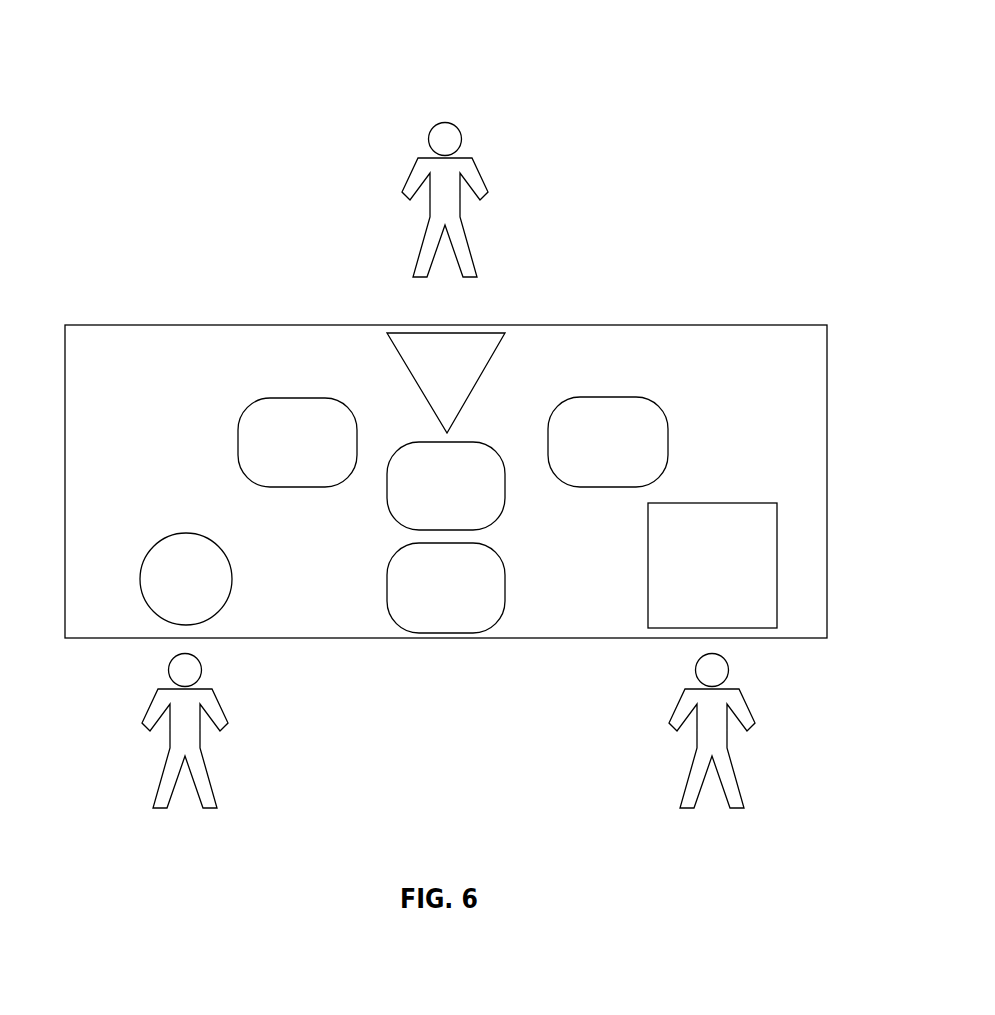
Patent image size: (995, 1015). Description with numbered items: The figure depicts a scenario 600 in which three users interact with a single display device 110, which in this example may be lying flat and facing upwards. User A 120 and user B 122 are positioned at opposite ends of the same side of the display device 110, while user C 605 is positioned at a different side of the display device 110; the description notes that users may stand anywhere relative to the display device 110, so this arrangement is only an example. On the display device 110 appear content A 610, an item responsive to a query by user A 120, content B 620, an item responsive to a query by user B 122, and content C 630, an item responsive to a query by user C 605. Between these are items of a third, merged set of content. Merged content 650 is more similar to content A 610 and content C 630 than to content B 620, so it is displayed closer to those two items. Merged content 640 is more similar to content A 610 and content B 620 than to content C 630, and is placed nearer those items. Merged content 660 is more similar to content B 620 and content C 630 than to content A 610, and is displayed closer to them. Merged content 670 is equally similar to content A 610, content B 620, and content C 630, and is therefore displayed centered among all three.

The multi-user display environment 600 is at (430, 41).
The user C 605 is at (446, 220).
The display device 110 is at (446, 481).
The content C 630 is at (446, 383).
The merged content 650 is at (297, 442).
The merged content 660 is at (608, 442).
The merged content 670 is at (446, 486).
The merged content 640 is at (446, 588).
The content A 610 is at (186, 579).
The content B 620 is at (712, 565).
The user A 120 is at (187, 750).
The user B 122 is at (713, 750).